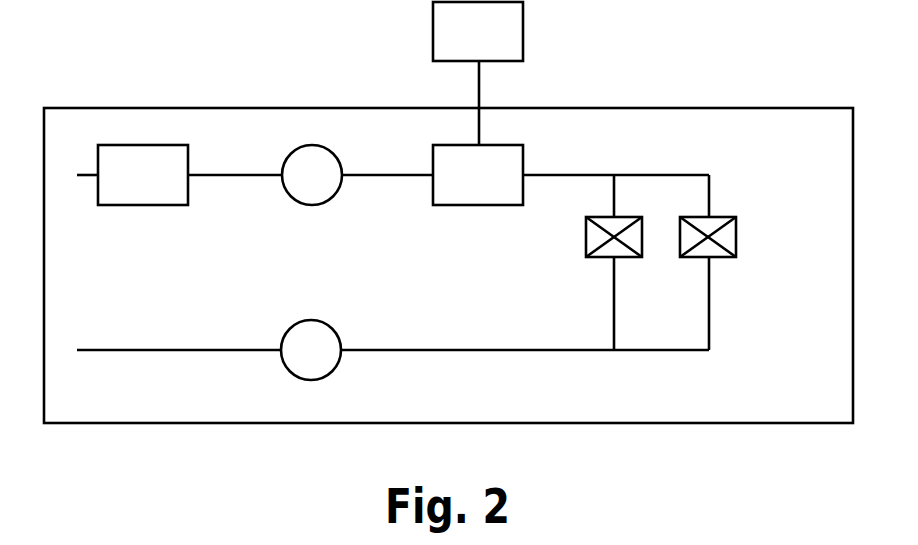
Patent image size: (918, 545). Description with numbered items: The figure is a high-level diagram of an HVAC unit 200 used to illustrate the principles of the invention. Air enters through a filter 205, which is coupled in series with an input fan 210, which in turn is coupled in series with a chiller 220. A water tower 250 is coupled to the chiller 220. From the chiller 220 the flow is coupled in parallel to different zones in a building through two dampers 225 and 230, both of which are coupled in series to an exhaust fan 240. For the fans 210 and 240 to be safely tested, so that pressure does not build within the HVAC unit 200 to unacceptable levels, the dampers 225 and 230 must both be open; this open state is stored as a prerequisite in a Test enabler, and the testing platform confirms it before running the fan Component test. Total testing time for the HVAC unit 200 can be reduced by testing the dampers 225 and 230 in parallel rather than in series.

The HVAC unit 200 is at (707, 108).
The filter 205 is at (124, 186).
The input fan 210 is at (293, 186).
The chiller 220 is at (459, 186).
The damper 225 is at (586, 238).
The damper 230 is at (736, 238).
The exhaust fan 240 is at (292, 361).
The water tower 250 is at (459, 42).